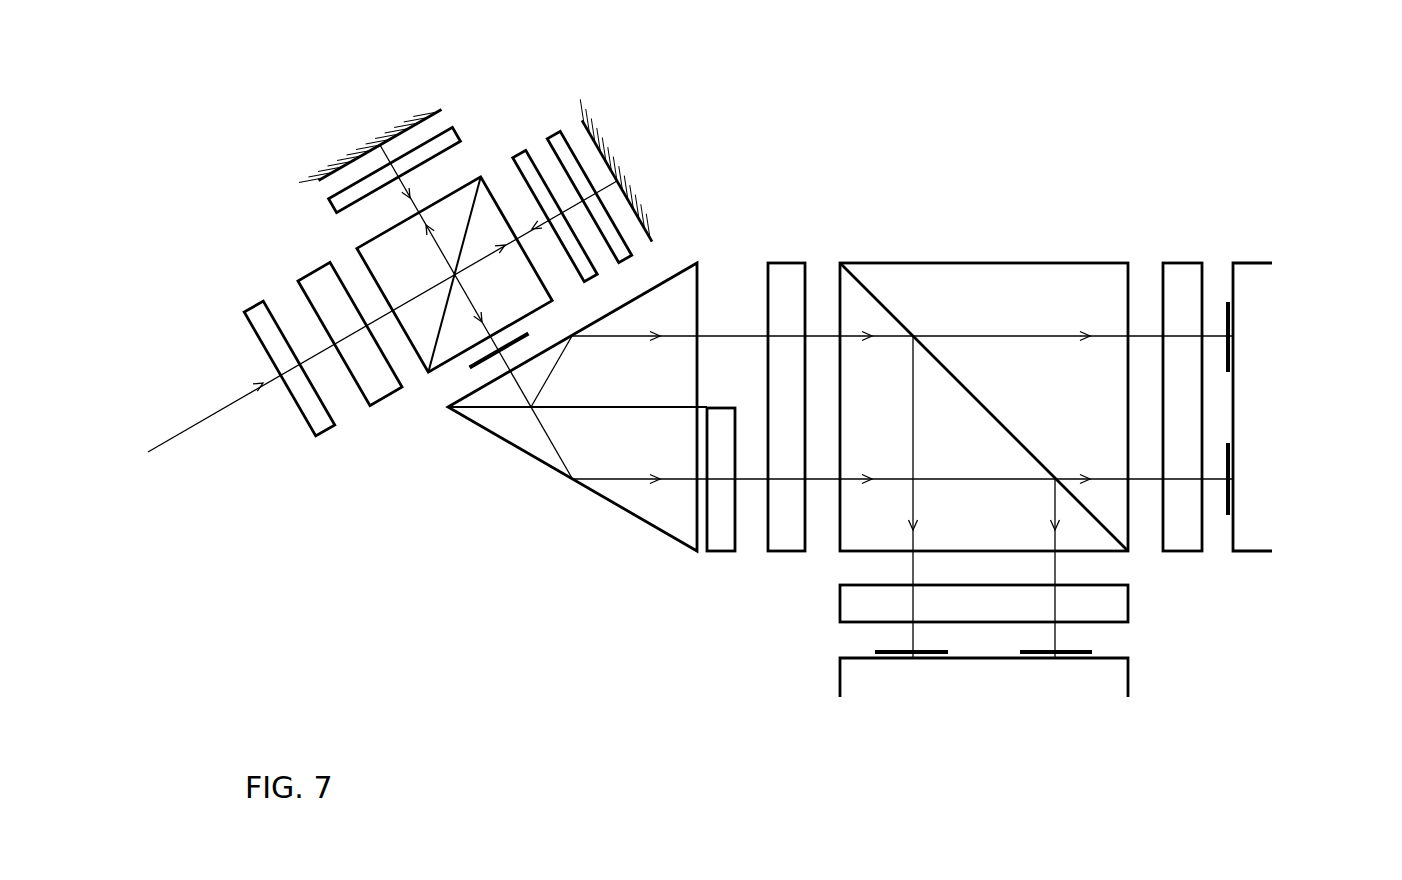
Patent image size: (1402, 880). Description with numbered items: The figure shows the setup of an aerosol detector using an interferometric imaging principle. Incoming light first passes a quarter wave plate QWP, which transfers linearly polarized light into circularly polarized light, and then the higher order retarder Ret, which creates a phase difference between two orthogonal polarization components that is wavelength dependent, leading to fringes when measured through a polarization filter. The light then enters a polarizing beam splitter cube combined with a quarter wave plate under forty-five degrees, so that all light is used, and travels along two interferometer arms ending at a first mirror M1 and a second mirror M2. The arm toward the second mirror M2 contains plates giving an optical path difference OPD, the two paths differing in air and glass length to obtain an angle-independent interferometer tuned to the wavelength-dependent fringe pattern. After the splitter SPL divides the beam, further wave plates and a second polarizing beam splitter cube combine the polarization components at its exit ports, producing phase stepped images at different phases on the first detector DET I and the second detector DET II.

The first mirror M1 is at (370, 140).
The second mirror M2 is at (626, 170).
The optical path difference OPD is at (558, 109).
The quarter wave plate QWP is at (325, 437).
The retarder Ret is at (387, 401).
The splitter SPL is at (665, 397).
The first detector DET I is at (984, 683).
The second detector DET II is at (1287, 407).